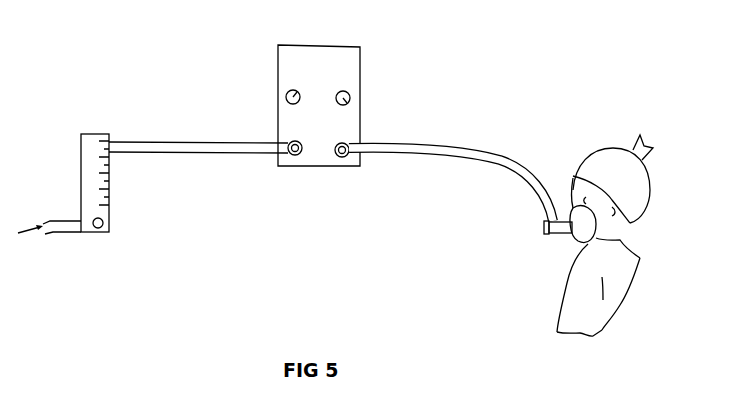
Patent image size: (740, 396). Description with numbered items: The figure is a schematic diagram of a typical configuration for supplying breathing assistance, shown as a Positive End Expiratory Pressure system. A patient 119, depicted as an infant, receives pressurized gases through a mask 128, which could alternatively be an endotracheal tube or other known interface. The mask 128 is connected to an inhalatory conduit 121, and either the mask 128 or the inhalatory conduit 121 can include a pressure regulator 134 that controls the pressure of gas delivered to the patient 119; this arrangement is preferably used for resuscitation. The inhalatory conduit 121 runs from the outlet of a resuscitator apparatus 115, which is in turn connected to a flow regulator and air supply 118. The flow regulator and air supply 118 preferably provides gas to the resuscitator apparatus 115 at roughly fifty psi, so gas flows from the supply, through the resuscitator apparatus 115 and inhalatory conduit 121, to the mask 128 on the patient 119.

The resuscitator apparatus 115 is at (362, 78).
The flow regulator and air supply 118 is at (93, 133).
The patient 119 is at (612, 165).
The inhalatory conduit 121 is at (520, 175).
The mask 128 is at (571, 203).
The pressure regulator 134 is at (543, 237).